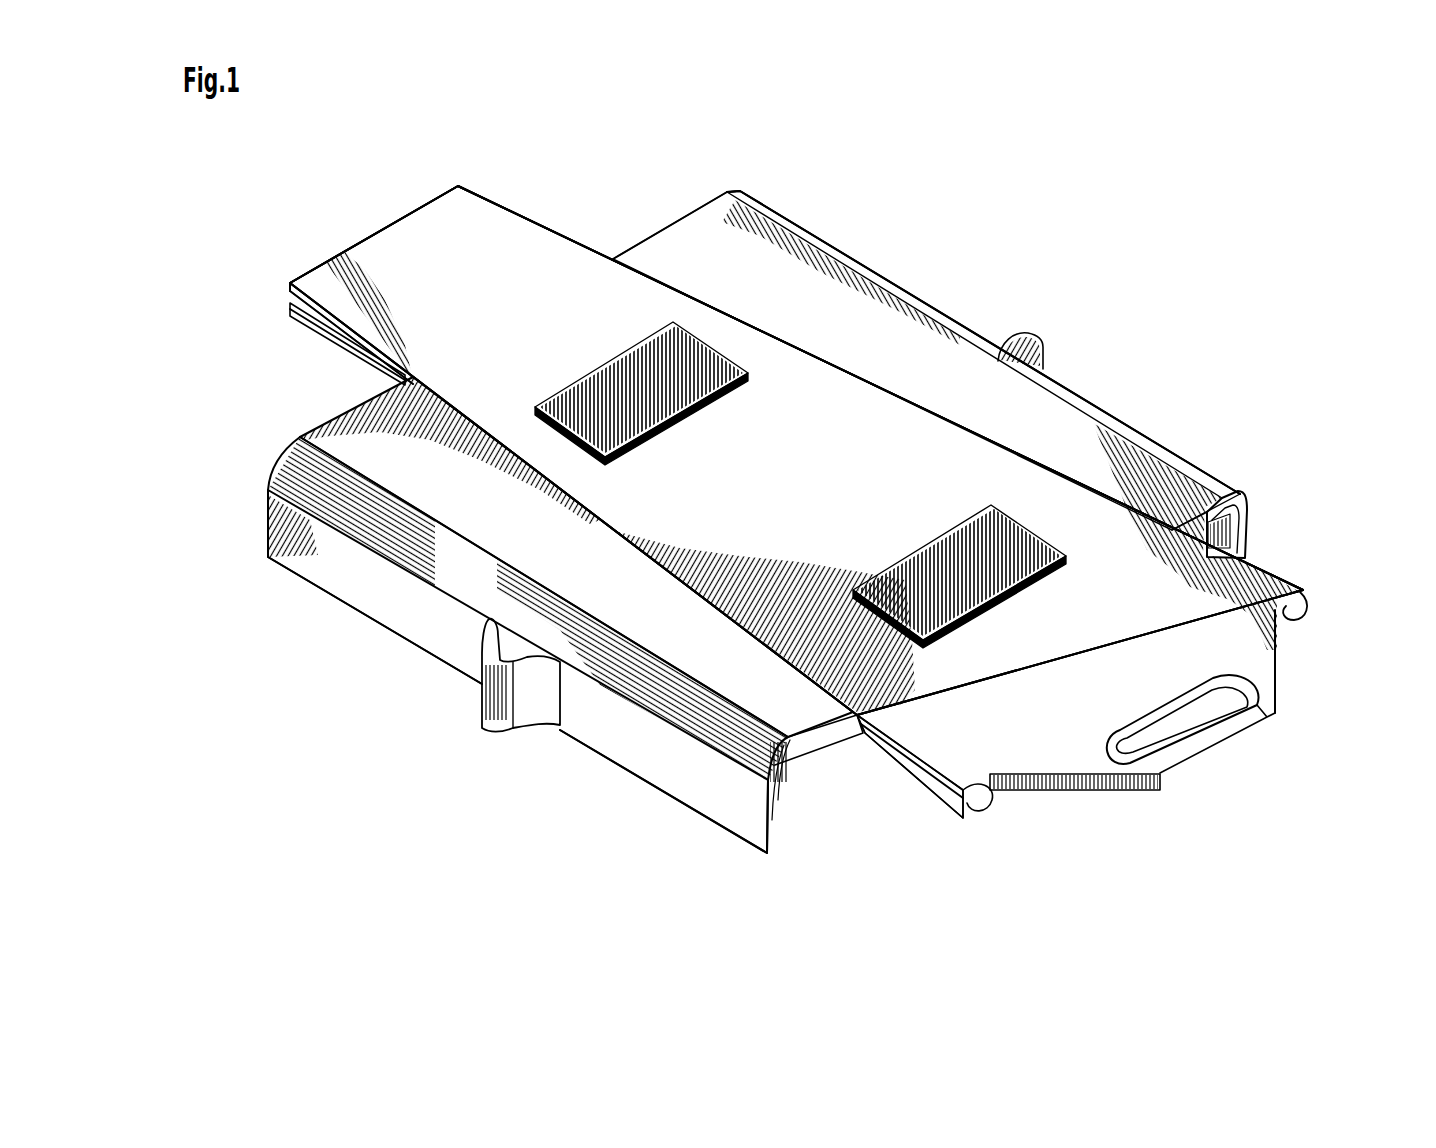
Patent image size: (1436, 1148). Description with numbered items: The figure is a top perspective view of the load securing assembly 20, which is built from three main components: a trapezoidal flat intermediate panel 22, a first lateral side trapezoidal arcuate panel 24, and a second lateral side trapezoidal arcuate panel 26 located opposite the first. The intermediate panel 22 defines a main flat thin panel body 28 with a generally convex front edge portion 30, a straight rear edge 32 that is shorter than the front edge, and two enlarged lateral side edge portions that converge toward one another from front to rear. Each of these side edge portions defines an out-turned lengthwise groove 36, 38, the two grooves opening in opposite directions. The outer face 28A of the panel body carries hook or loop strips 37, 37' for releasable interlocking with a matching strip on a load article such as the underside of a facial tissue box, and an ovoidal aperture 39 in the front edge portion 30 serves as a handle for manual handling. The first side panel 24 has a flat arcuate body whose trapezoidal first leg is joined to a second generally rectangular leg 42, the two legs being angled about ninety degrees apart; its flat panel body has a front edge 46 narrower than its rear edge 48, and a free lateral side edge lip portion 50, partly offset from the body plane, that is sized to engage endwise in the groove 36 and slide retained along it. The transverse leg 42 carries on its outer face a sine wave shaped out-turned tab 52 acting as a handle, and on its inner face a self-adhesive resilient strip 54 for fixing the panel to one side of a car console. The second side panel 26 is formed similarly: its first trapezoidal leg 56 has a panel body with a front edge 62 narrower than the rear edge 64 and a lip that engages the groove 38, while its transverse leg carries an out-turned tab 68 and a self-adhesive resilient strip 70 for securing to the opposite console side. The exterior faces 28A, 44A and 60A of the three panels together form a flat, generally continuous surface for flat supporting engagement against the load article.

The load securing assembly 20 is at (485, 168).
The trapezoidal flat intermediate panel 22 is at (548, 214).
The first lateral side trapezoidal arcuate panel 24 is at (596, 765).
The second lateral side trapezoidal arcuate panel 26 is at (912, 301).
The main flat thin panel body 28 is at (565, 293).
The outer face of panel body 28A is at (810, 479).
The convex front edge portion 30 is at (1233, 748).
The straight rear edge 32 is at (370, 232).
The out-turned lengthwise groove 36 is at (347, 340).
The hook or loop strip 37 is at (740, 341).
The hook or loop strip 37' is at (960, 438).
The out-turned lengthwise groove 38 is at (1299, 624).
The ovoidal aperture 39 is at (1200, 745).
The second generally rectangular leg 42 is at (378, 595).
The exterior face of first leg panel body 44A is at (460, 488).
The front edge 46 is at (815, 738).
The rear edge 48 is at (318, 405).
The free lateral side edge lip portion 50 is at (856, 736).
The out-turned tab 52 is at (490, 715).
The self-adhesive resilient strip 54 is at (796, 806).
The first trapezoidal leg 56 is at (1067, 423).
The exterior face of second leg panel body 60A is at (952, 384).
The front edge 62 is at (1240, 492).
The rear edge 64 is at (690, 211).
The out-turned tab 68 is at (1043, 338).
The self-adhesive resilient strip 70 is at (1212, 537).